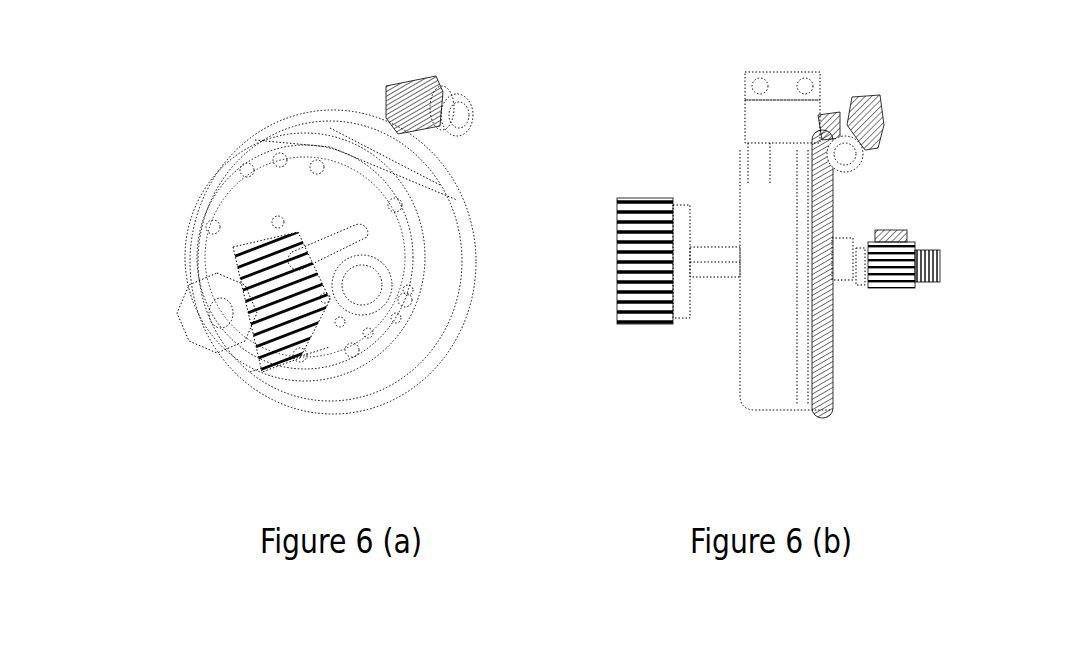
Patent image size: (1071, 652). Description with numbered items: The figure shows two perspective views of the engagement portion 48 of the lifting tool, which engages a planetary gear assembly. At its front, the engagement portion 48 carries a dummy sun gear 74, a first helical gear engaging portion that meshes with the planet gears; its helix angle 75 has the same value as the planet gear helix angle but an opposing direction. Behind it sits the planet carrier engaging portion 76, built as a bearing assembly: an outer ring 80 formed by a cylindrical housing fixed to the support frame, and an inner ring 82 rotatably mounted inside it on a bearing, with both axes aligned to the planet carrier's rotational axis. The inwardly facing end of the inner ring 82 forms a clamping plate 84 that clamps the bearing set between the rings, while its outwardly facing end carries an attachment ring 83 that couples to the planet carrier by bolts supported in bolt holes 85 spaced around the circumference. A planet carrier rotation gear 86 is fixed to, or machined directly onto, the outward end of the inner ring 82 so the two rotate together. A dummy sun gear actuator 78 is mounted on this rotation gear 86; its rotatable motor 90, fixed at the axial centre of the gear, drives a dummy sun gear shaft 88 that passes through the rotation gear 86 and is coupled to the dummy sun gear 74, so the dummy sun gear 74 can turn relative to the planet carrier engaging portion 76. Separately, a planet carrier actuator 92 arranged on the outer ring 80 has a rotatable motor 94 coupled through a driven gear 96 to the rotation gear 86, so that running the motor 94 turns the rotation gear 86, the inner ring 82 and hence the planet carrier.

In FIG. 6A, the engagement portion 48 is at (478, 172).
In FIG. 6B, the engagement portion 48 is at (700, 118).
In FIG. 6A, the dummy sun gear 74 is at (215, 287).
In FIG. 6B, the dummy sun gear 74 is at (625, 235).
In FIG. 6A, the helix angle 75 is at (187, 343).
In FIG. 6B, the helix angle 75 is at (653, 262).
In FIG. 6A, the planet carrier engaging portion 76 is at (168, 204).
In FIG. 6B, the planet carrier engaging portion 76 is at (840, 198).
In FIG. 6B, the dummy sun gear actuator 78 is at (855, 276).
In FIG. 6A, the outer ring 80 is at (430, 302).
In FIG. 6A, the inner ring 82 is at (315, 340).
In FIG. 6A, the attachment ring 83 is at (280, 205).
In FIG. 6A, the clamping plate 84 is at (400, 322).
In FIG. 6A, the bolt holes 85 is at (278, 220).
In FIG. 6B, the planet carrier rotation gear 86 is at (832, 367).
In FIG. 6A, the dummy sun gear shaft 88 is at (315, 277).
In FIG. 6B, the dummy sun gear shaft 88 is at (715, 267).
In FIG. 6B, the rotatable motor 90 is at (922, 276).
In FIG. 6A, the planet carrier actuator 92 is at (455, 99).
In FIG. 6B, the planet carrier actuator 92 is at (875, 135).
In FIG. 6A, the rotatable motor 94 is at (407, 95).
In FIG. 6B, the rotatable motor 94 is at (857, 128).
In FIG. 6B, the driven gear 96 is at (830, 118).